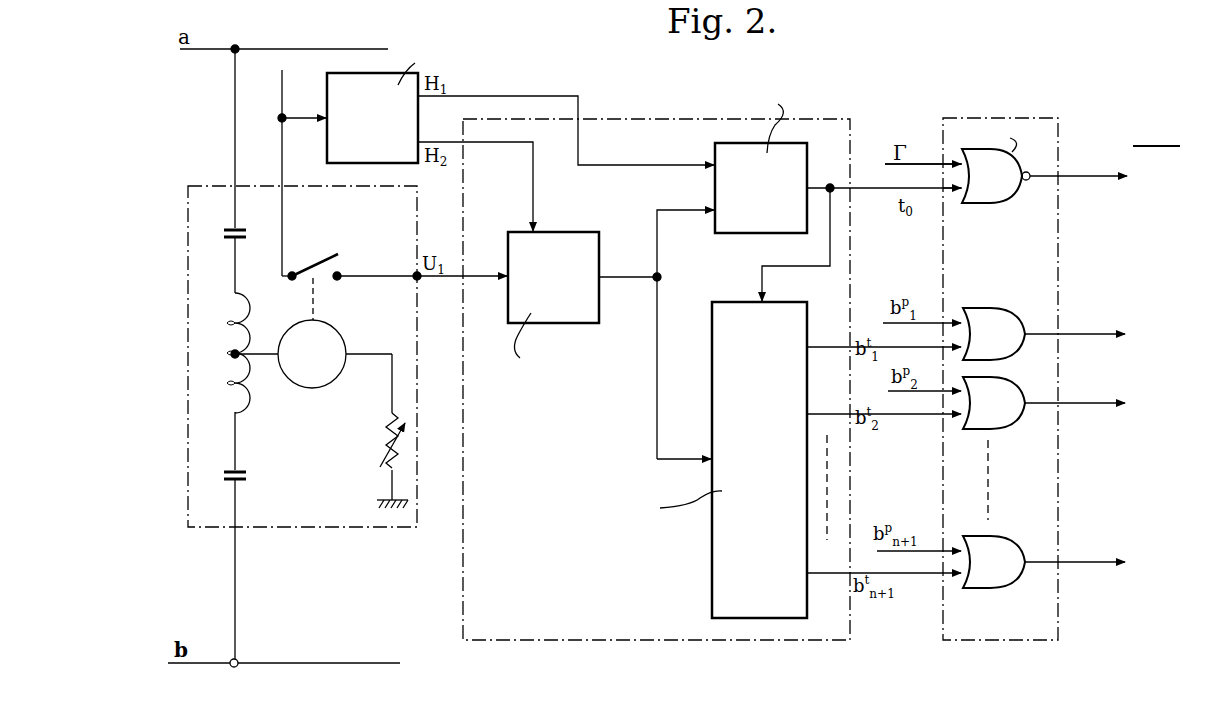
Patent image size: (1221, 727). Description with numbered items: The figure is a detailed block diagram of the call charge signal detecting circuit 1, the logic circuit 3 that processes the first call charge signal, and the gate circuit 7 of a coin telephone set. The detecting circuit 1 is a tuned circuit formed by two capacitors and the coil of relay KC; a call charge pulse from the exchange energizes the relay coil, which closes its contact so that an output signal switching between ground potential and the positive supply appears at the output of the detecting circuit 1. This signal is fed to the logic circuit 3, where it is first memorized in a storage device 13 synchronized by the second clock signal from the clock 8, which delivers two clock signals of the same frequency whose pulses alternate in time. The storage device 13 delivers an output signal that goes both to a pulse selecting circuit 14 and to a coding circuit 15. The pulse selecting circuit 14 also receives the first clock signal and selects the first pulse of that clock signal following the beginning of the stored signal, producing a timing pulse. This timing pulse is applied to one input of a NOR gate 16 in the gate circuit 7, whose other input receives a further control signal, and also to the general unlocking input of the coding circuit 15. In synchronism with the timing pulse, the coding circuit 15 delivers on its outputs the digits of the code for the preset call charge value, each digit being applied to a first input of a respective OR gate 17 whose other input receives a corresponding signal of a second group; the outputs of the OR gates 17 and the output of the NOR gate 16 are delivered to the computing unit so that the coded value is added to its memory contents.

The call charge signal detecting circuit 1 is at (188, 281).
The logic circuit 3 is at (663, 118).
The gate circuit 7 is at (1000, 117).
The clock 8 is at (401, 104).
The storage device 13 is at (553, 307).
The pulse selecting circuit 14 is at (761, 188).
The coding circuit 15 is at (700, 460).
The NOR gate 16 is at (1003, 196).
The OR gates 17 is at (1005, 315).